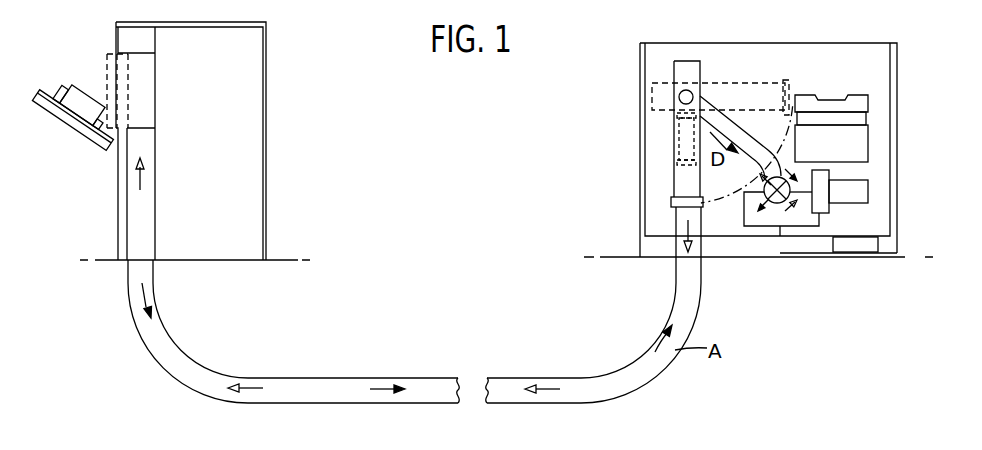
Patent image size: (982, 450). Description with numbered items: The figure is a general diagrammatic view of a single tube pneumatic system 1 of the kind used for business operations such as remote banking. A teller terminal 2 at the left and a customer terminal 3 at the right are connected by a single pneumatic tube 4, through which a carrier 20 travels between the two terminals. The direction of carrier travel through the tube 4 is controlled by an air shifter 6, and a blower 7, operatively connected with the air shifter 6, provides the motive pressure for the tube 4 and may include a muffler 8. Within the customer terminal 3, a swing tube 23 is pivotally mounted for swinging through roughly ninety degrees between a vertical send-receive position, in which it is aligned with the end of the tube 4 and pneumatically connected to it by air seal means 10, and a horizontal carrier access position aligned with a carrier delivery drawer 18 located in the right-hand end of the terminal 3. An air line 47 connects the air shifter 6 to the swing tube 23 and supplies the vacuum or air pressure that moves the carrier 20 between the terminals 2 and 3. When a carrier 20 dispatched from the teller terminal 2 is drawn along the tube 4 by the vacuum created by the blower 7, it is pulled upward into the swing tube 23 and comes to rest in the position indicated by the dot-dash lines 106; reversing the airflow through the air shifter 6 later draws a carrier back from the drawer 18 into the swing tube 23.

The pneumatic tube system 1 is at (548, 78).
The teller terminal 2 is at (268, 61).
The carrier 20 is at (71, 84).
The pneumatic tube 4 is at (440, 405).
The customer terminal 3 is at (800, 43).
The swing tube 23 is at (664, 148).
The dot-dash lines 106 is at (677, 133).
The air line 47 is at (737, 133).
The carrier delivery drawer 18 is at (864, 136).
The blower 7 is at (865, 186).
The air shifter 6 is at (779, 204).
The muffler 8 is at (864, 252).
The air seal means 10 is at (659, 444).